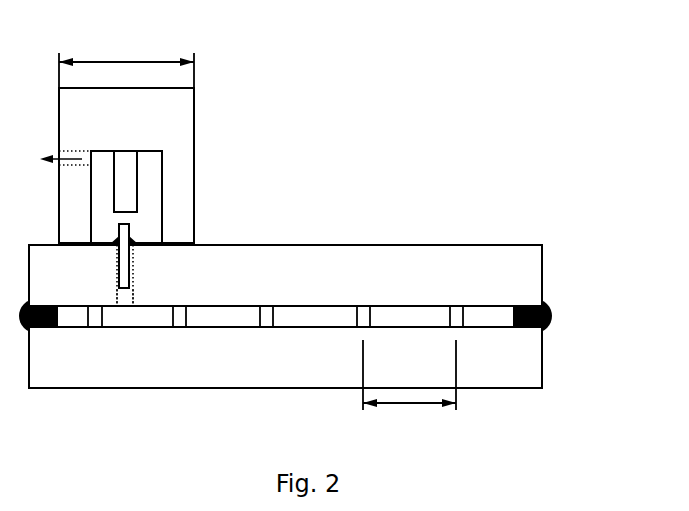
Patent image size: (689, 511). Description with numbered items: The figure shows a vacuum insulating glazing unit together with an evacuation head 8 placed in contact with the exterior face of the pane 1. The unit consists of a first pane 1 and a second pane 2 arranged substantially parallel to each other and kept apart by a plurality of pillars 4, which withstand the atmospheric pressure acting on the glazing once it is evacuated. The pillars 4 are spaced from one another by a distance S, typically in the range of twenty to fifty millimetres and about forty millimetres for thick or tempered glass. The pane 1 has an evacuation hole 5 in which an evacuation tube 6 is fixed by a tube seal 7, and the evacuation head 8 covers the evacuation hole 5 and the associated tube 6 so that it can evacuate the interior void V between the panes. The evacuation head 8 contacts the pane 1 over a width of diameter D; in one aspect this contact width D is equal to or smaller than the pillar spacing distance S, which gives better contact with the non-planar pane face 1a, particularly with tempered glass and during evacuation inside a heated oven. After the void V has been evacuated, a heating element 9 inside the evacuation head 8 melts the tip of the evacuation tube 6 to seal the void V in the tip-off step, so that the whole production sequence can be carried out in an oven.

The first glass pane 1 is at (533, 255).
The pane non-planar face 1a is at (346, 243).
The second glass pane 2 is at (534, 359).
The pillar 4 is at (455, 315).
The evacuation hole 5 is at (133, 297).
The evacuation tube 6 is at (133, 262).
The tube seal 7 is at (115, 236).
The evacuation head 8 is at (71, 138).
The heating element 9 is at (132, 193).
The contact diameter D is at (126, 60).
The pillar spacing distance S is at (409, 386).
The interior void V is at (240, 320).